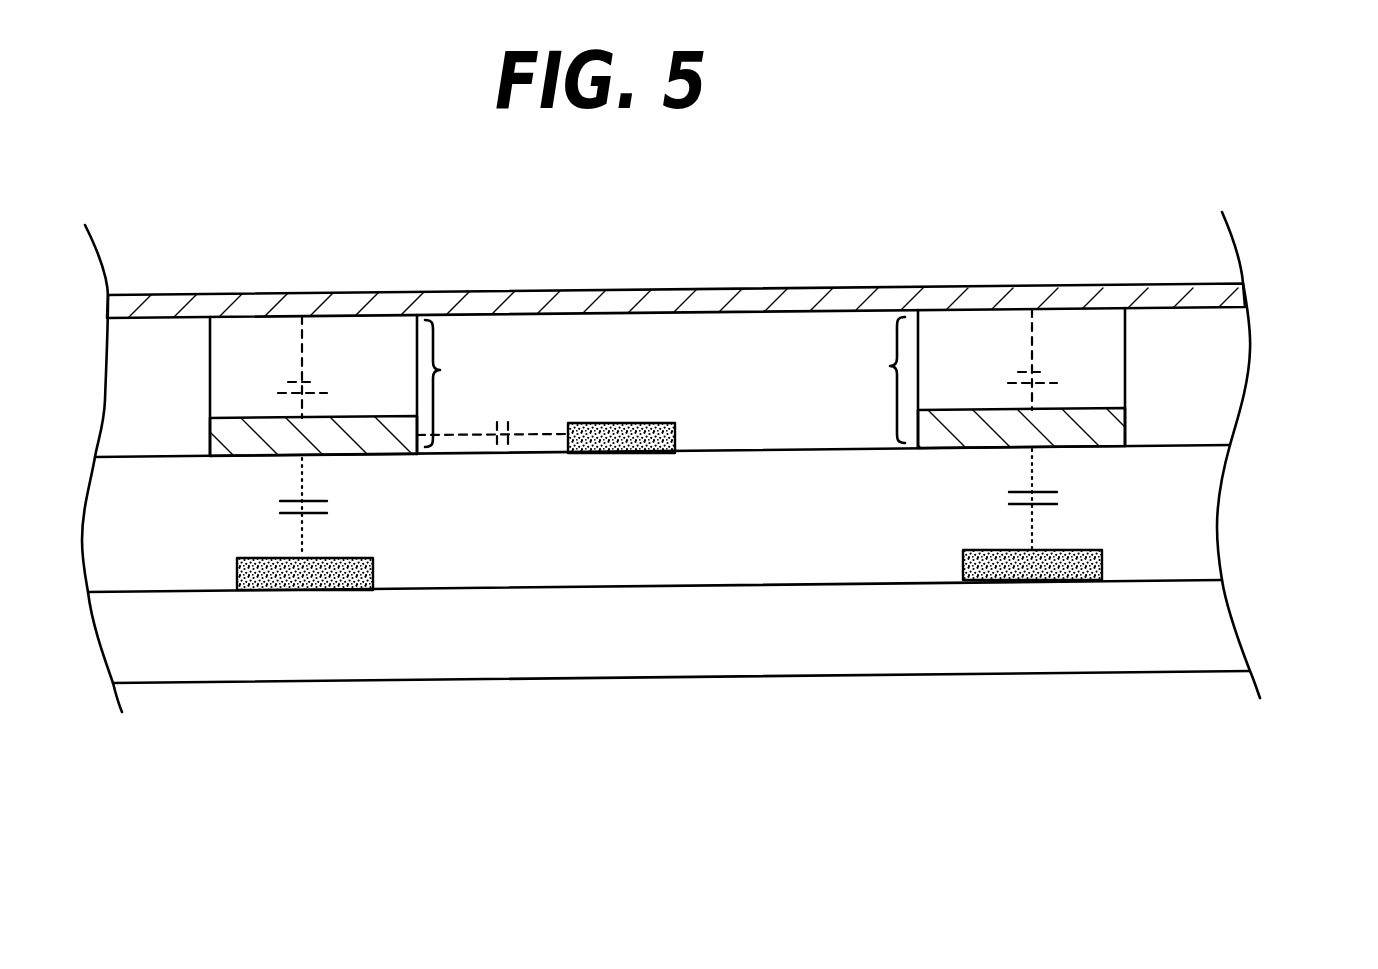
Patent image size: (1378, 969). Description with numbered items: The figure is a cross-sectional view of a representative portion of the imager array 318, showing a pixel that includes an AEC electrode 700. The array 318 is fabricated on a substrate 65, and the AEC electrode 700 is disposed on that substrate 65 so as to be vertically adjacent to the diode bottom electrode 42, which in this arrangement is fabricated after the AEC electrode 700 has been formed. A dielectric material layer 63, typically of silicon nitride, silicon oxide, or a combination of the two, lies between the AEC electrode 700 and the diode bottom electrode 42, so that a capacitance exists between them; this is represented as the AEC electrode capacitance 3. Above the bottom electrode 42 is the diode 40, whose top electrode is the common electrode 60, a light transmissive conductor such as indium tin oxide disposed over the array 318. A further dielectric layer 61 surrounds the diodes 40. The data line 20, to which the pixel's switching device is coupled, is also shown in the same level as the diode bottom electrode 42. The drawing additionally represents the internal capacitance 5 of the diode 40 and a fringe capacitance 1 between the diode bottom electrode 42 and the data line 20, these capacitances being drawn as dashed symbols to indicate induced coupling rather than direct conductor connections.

The array 318 is at (323, 168).
The common electrode 60 is at (790, 285).
The dielectric layer 61 is at (1245, 370).
The dielectric material layer 63 is at (1218, 523).
The substrate 65 is at (1240, 632).
The diode bottom electrode 42 is at (210, 437).
The internal capacitance 5 is at (325, 392).
The diode 40 is at (665, 382).
The fringe capacitance 1 is at (510, 432).
The data line 20 is at (648, 455).
The AEC electrode capacitance 3 is at (330, 507).
The AEC electrode 700 is at (352, 592).